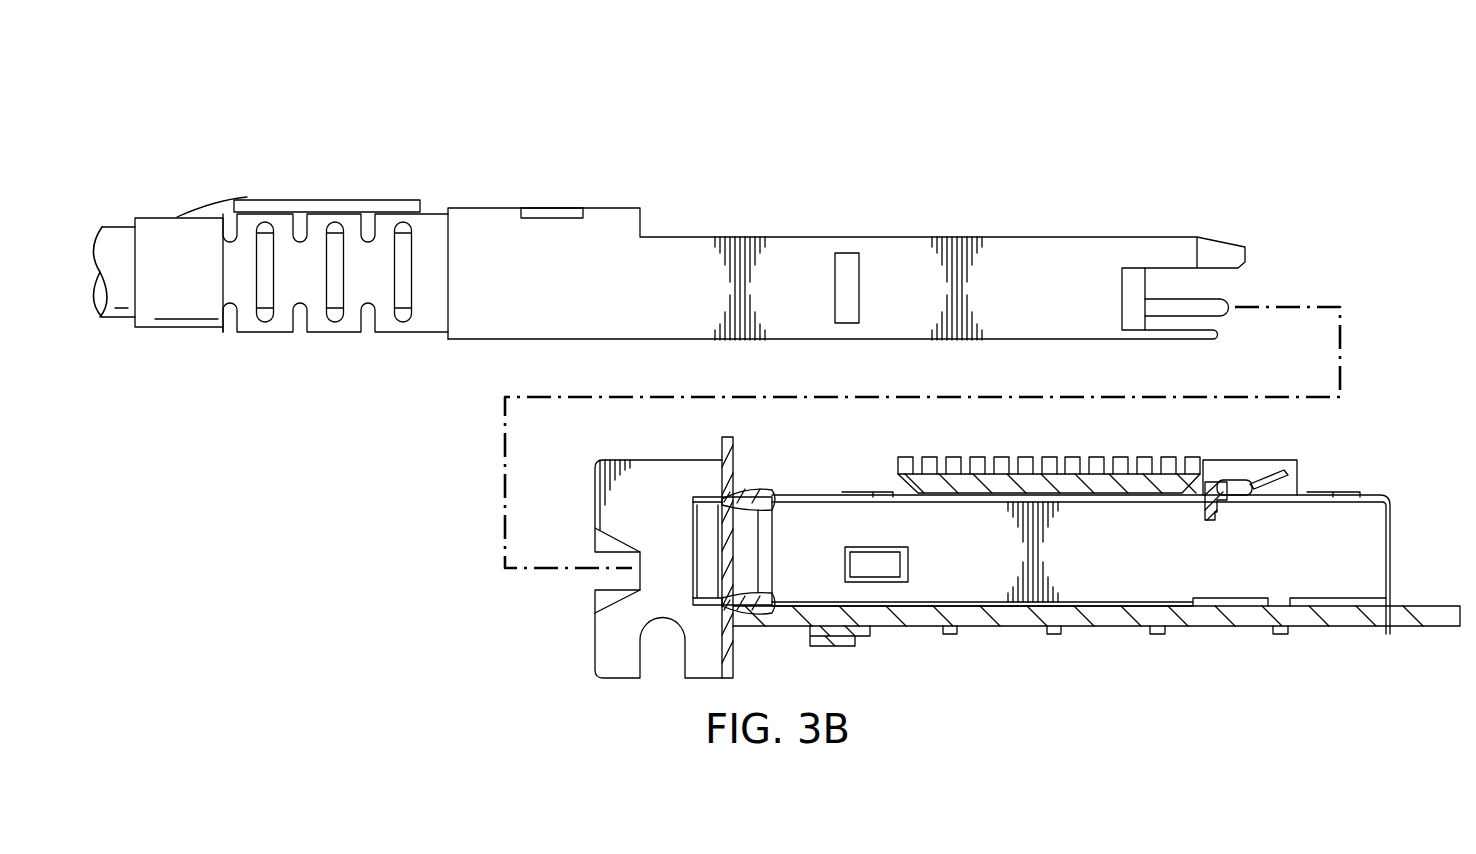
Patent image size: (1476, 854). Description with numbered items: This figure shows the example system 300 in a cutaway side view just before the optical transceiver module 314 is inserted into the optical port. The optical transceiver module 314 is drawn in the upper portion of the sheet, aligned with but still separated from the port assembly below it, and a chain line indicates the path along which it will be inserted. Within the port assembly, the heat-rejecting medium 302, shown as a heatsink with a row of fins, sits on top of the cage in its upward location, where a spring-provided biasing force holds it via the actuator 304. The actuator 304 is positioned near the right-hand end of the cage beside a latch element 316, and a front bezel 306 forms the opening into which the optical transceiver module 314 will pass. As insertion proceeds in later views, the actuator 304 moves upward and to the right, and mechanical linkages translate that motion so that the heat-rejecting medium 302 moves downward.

The system 300 is at (362, 87).
The optical transceiver module 314 is at (603, 208).
The heat-rejecting medium 302 is at (899, 462).
The actuator 304 is at (1227, 505).
The bezel 306 is at (595, 641).
The latch 316 is at (1297, 470).